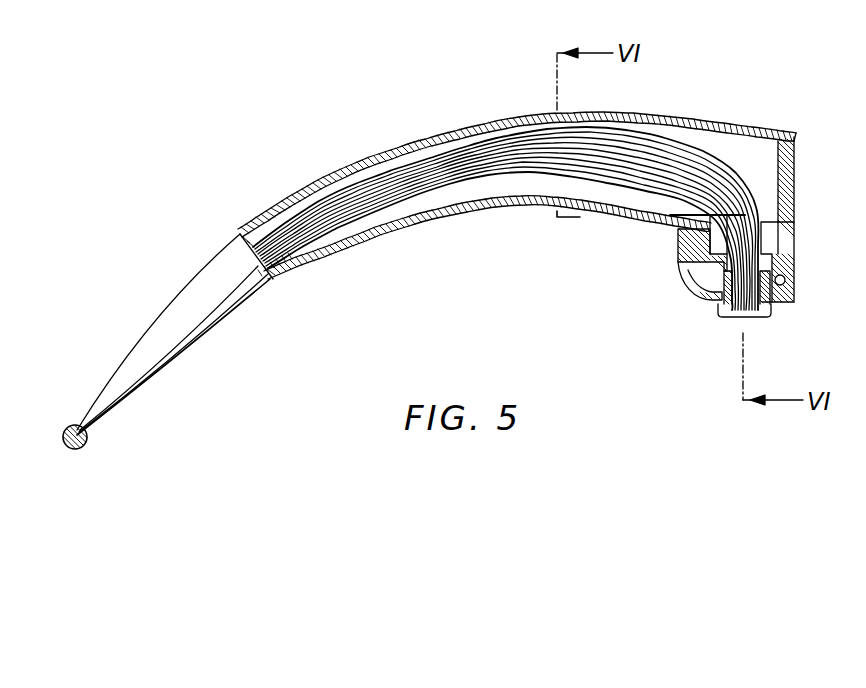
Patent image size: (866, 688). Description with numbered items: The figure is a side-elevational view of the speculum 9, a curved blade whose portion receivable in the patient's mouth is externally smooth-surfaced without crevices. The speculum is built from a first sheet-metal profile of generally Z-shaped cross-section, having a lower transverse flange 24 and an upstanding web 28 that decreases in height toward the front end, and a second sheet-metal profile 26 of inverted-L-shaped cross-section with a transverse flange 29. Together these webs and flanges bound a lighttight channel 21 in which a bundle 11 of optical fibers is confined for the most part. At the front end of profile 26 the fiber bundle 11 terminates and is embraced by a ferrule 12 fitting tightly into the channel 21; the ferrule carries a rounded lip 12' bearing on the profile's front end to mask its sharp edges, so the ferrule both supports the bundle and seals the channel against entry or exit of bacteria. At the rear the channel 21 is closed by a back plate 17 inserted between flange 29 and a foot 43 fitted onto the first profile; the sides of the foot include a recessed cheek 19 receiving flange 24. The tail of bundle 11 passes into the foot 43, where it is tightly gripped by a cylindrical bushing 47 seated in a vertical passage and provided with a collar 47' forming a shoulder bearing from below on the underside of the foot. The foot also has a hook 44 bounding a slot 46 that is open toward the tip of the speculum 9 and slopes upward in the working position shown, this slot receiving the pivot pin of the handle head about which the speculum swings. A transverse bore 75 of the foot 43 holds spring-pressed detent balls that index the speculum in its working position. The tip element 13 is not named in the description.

The speculum 9 is at (199, 268).
The bundle of optical fibers 11 is at (357, 205).
The ferrule 12 is at (275, 296).
The lip 12' is at (254, 224).
The blade tip 13 is at (78, 424).
The back plate 17 is at (797, 172).
The cheek 19 is at (788, 233).
The lighttight channel 21 is at (761, 150).
The lower transverse flange 24 is at (512, 200).
The second sheet-metal profile 26 is at (486, 128).
The upstanding web 28 is at (160, 322).
The transverse flange 29 is at (708, 126).
The foot 43 is at (784, 304).
The hook 44 is at (683, 296).
The slot 46 is at (680, 270).
The cylindrical bushing 47 is at (692, 286).
The collar 47' is at (714, 323).
The transverse bore 75 is at (787, 278).